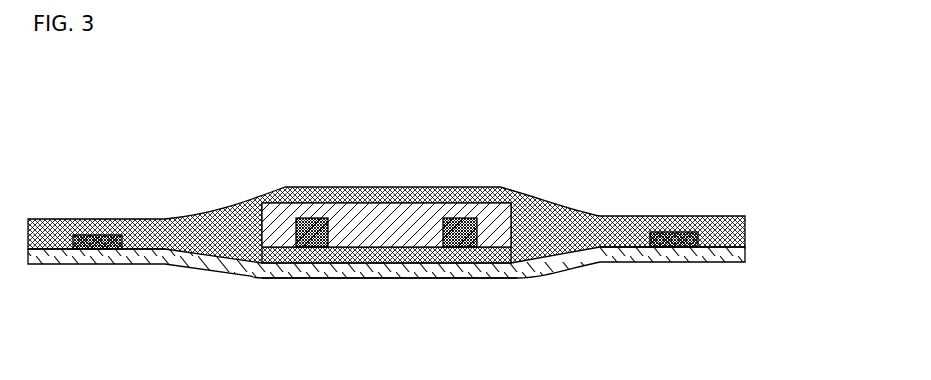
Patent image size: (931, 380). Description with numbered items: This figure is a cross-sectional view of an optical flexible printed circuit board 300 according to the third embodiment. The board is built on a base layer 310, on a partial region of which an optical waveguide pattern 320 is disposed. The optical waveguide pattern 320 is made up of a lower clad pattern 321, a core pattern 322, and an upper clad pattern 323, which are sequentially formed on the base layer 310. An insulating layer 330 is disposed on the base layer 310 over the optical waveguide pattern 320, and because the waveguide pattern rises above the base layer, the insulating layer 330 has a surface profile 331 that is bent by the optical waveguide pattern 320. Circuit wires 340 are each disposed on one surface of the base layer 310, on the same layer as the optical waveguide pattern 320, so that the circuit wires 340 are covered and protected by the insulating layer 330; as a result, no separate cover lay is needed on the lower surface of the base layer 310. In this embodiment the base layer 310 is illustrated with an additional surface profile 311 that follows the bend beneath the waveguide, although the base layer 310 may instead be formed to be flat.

The optical flexible printed circuit board 300 is at (76, 78).
The base layer 310 is at (747, 252).
The additional surface profile 311 is at (370, 279).
The optical waveguide pattern 320 is at (365, 171).
The lower clad pattern 321 is at (263, 207).
The core pattern 322 is at (310, 207).
The upper clad pattern 323 is at (414, 188).
The insulating layer 330 is at (746, 217).
The surface profile 331 is at (536, 196).
The circuit wires 340 is at (677, 263).